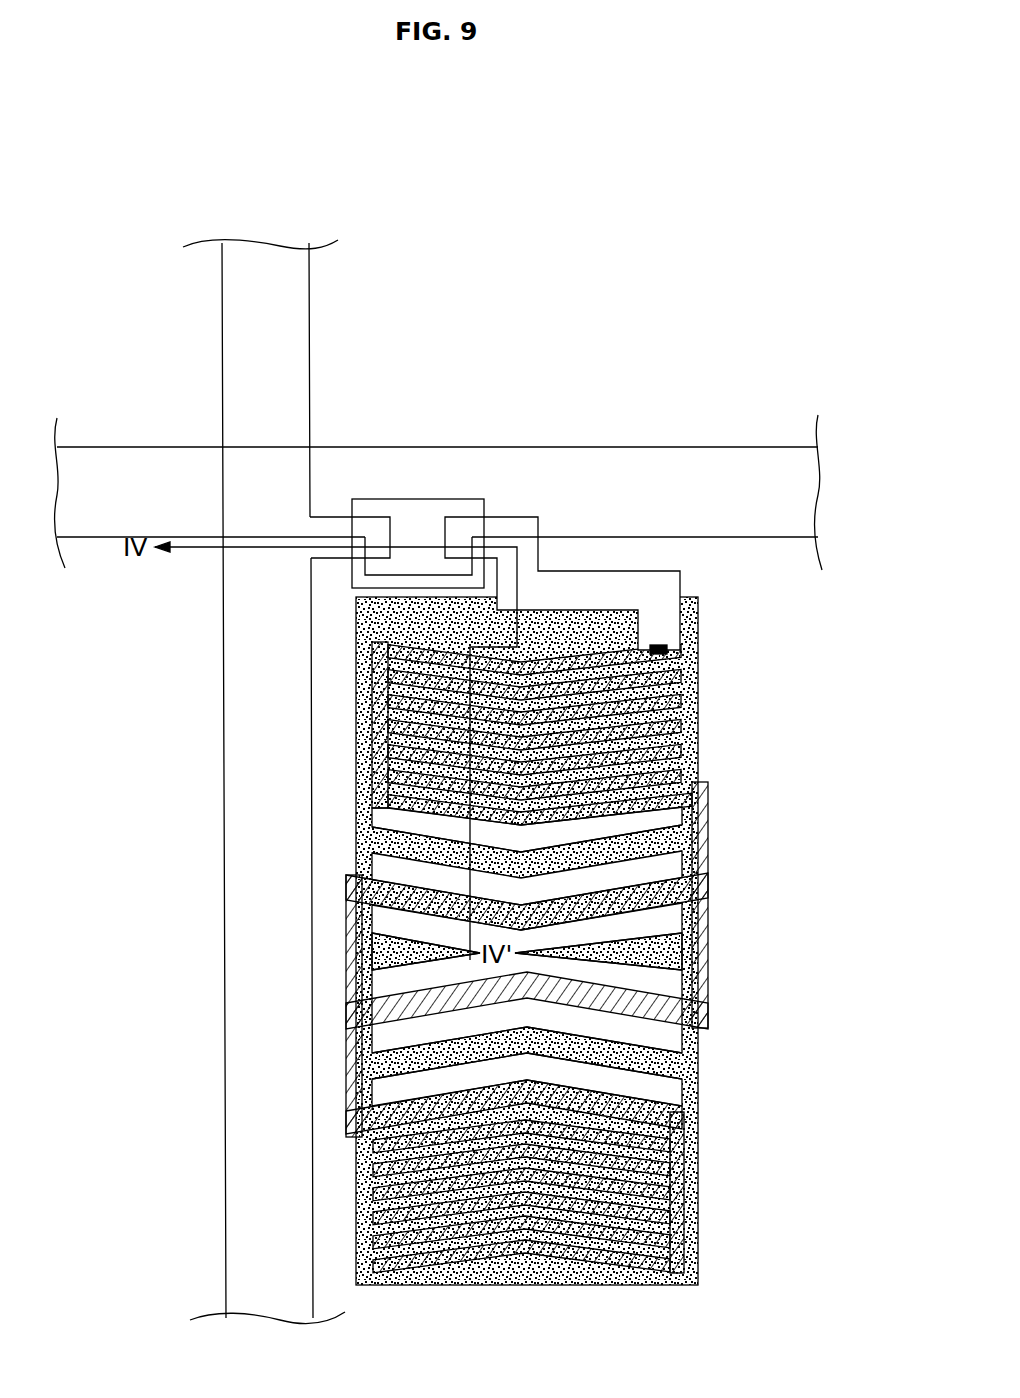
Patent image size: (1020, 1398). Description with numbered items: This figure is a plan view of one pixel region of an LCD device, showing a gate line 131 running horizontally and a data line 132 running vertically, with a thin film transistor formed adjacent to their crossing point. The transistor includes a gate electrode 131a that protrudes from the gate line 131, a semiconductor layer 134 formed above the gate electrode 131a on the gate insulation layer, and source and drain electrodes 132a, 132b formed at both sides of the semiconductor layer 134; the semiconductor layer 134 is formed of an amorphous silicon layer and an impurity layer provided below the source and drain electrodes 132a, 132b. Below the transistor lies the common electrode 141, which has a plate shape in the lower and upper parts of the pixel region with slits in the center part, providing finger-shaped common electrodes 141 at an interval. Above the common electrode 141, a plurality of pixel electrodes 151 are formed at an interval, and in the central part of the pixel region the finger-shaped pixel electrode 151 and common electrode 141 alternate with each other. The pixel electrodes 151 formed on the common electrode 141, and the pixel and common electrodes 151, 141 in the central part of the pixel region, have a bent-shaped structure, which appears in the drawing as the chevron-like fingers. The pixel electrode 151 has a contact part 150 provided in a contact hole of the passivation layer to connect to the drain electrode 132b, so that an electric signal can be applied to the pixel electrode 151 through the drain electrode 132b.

The gate line 131 is at (713, 465).
The gate electrode 131a is at (417, 575).
The data line 132 is at (310, 322).
The source electrode 132a is at (333, 558).
The drain electrode 132b is at (578, 580).
The semiconductor layer 134 is at (405, 499).
The common electrode 141 is at (698, 725).
The contact part 150 is at (667, 648).
The pixel electrode 151 is at (608, 1285).